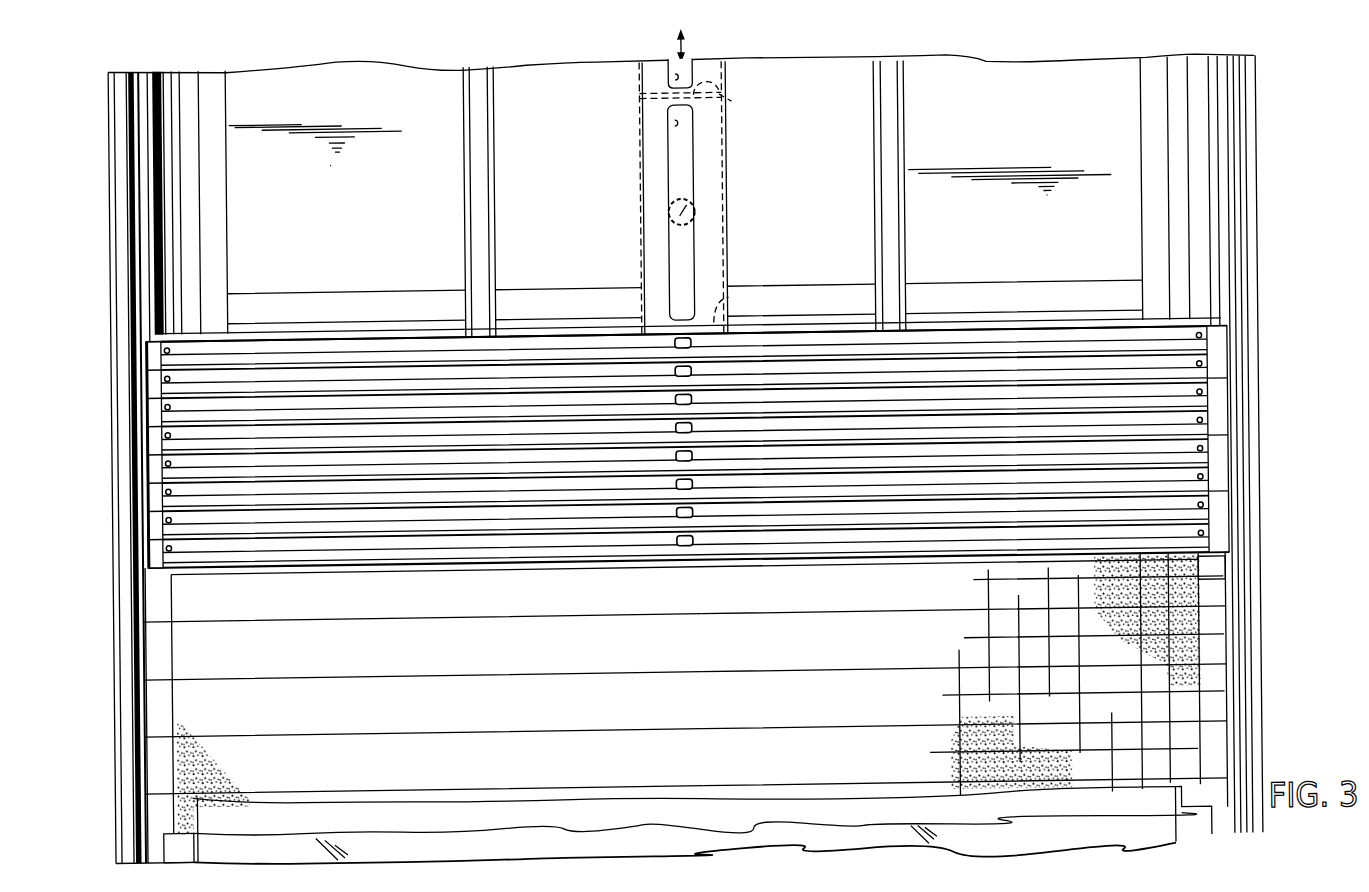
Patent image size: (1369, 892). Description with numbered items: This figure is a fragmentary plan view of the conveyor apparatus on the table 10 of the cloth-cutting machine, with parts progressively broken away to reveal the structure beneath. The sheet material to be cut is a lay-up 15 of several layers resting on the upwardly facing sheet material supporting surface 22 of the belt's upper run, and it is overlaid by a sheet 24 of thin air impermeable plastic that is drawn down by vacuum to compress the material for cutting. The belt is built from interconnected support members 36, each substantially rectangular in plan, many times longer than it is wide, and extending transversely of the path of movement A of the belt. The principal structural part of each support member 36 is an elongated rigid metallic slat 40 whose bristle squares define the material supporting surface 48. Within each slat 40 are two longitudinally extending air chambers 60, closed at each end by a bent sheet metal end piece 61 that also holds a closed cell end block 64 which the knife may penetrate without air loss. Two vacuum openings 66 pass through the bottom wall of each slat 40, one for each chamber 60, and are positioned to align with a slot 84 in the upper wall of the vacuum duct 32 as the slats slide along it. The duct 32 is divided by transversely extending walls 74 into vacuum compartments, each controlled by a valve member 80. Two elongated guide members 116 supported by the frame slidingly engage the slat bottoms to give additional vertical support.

The table 10 is at (311, 62).
The path of movement A is at (688, 51).
The lay-up 15 is at (518, 811).
The sheet material supporting surface 22 is at (892, 684).
The sheet of thin air impermeable plastic 24 is at (750, 834).
The vacuum duct 32 is at (731, 160).
The support member 36 is at (179, 686).
The slat 40 is at (160, 362).
The material supporting surface 48 is at (1185, 657).
The air chambers 60 is at (438, 343).
The end piece 61 is at (152, 468).
The end block 64 is at (153, 751).
The vacuum openings 66 is at (676, 372).
The transversely extending walls 74 is at (734, 301).
The valve member 80 is at (697, 201).
The slot 84 is at (674, 128).
The elongated guide members 116 is at (496, 222).